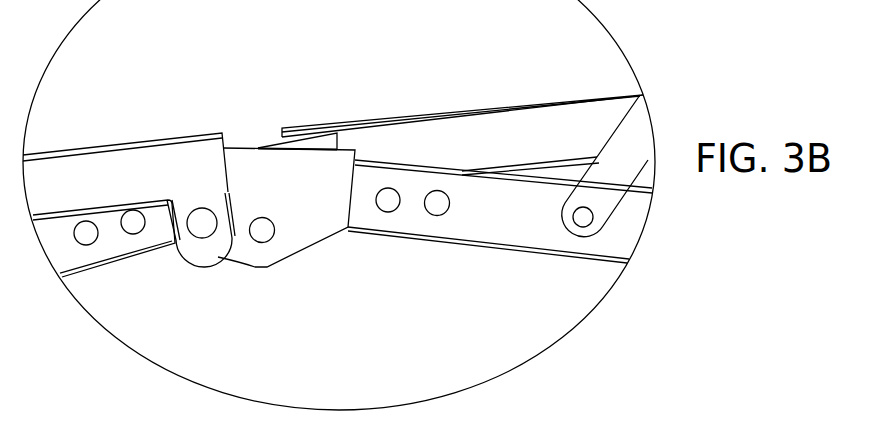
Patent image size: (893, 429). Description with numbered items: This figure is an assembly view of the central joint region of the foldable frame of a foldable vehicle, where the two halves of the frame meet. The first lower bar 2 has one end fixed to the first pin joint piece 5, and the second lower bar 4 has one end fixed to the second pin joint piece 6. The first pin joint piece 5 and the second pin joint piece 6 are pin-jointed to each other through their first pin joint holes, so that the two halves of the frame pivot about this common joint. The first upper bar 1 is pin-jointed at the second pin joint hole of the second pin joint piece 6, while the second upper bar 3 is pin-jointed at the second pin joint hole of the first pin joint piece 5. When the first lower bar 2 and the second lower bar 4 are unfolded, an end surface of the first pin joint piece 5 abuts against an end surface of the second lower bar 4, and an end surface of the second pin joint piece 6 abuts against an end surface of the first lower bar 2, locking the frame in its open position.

The first upper bar 1 is at (134, 141).
The first lower bar 2 is at (143, 256).
The second upper bar 3 is at (380, 125).
The second lower bar 4 is at (485, 245).
The first pin joint piece 5 is at (267, 143).
The second pin joint piece 6 is at (307, 250).